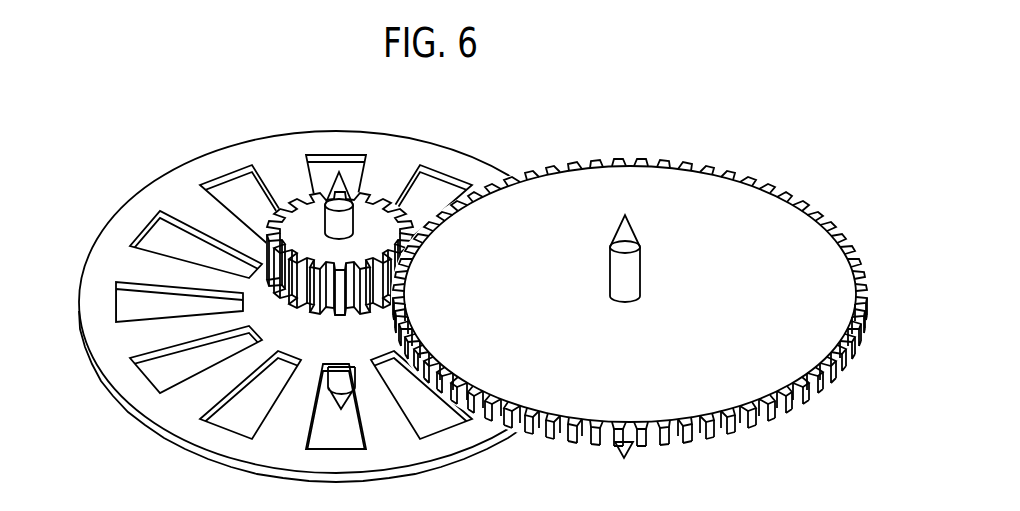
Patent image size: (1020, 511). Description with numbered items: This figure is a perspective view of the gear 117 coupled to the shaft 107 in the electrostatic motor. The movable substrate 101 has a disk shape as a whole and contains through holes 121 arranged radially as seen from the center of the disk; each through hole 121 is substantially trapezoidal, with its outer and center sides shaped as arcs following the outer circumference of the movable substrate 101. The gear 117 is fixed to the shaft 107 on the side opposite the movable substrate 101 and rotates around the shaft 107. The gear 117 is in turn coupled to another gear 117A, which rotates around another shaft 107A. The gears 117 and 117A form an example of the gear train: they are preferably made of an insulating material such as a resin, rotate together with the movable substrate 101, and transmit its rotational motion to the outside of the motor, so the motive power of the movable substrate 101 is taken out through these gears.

The movable substrate 101 is at (185, 449).
The through holes 121 is at (438, 417).
The gear 117 is at (302, 217).
The shaft 107 is at (345, 220).
The another gear 117A is at (740, 250).
The another shaft 107A is at (626, 272).